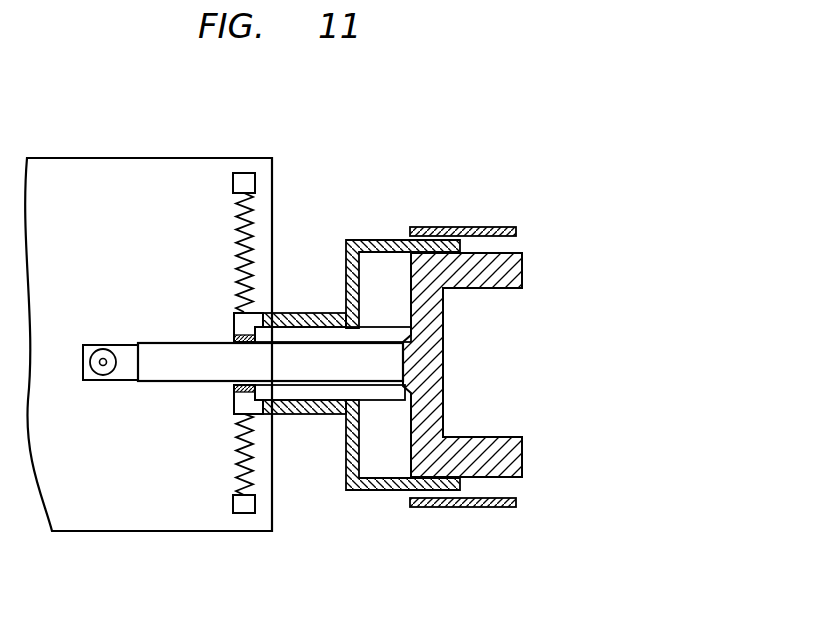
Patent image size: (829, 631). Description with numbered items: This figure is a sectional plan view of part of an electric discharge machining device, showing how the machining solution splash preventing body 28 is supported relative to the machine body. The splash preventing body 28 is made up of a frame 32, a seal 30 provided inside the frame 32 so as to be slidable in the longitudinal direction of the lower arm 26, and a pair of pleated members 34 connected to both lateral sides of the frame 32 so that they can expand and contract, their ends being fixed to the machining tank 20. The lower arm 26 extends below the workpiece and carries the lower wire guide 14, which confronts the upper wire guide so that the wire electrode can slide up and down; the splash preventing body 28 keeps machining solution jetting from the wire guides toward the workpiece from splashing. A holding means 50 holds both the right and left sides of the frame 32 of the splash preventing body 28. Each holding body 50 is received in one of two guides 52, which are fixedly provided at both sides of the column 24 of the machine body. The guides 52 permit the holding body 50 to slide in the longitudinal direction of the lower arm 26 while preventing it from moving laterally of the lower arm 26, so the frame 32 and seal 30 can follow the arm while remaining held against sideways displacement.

The lower wire guide 14 is at (120, 381).
The machining tank 20 is at (155, 531).
The column 24 is at (408, 253).
The lower arm 26 is at (180, 381).
The splash preventing body 28 is at (252, 514).
The seal 30 is at (234, 337).
The frame 32 is at (262, 312).
The pleated members 34 is at (251, 237).
The holding means 50 is at (364, 240).
The guides 52 is at (452, 227).